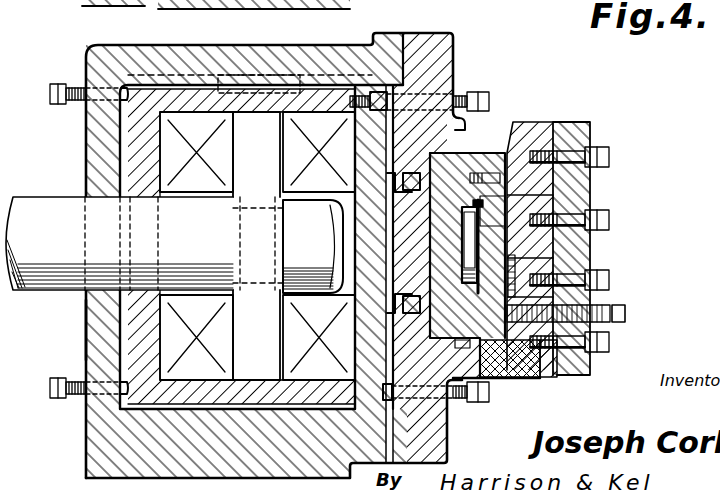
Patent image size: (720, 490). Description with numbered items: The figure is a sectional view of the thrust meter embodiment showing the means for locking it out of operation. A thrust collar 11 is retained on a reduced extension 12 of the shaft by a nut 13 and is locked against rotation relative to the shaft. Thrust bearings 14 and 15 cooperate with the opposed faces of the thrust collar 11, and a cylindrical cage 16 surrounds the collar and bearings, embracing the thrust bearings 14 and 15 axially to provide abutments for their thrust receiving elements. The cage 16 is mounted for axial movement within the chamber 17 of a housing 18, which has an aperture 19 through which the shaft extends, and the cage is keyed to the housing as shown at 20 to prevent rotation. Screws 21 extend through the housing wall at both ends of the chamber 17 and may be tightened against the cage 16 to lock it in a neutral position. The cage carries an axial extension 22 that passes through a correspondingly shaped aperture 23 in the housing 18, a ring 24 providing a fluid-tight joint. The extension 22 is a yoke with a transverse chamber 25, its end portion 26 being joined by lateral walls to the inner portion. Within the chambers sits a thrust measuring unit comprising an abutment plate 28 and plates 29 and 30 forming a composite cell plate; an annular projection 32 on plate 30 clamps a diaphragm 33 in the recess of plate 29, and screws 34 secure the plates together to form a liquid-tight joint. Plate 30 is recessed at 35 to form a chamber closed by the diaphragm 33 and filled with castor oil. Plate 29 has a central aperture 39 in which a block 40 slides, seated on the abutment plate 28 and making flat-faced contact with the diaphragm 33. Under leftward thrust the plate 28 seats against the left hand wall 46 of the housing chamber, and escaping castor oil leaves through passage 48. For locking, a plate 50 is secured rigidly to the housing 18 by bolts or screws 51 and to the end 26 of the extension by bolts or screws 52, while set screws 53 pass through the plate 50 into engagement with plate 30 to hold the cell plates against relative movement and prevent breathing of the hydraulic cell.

The thrust collar 11 is at (274, 152).
The reduced extension 12 is at (252, 228).
The nut 13 is at (311, 293).
The thrust bearing 14 is at (206, 180).
The thrust bearing 15 is at (327, 203).
The cylindrical cage 16 is at (352, 332).
The chamber 17 is at (118, 90).
The housing 18 is at (312, 58).
The aperture 19 is at (92, 312).
The key 20 is at (240, 72).
The screws 21 is at (70, 105).
The axial extension 22 is at (388, 362).
The aperture 23 is at (426, 168).
The ring 24 is at (425, 200).
The chamber 25 is at (426, 256).
The end portion 26 is at (580, 266).
The abutment plate 28 is at (476, 166).
The plate 29 is at (515, 380).
The plate 30 is at (545, 378).
The annular projection 32 is at (482, 203).
The diaphragm 33 is at (466, 284).
The screws 34 is at (516, 140).
The chamber 35 is at (514, 266).
The aperture 39 is at (481, 202).
The block 40 is at (466, 244).
The left hand wall 46 is at (452, 146).
The passage 48 is at (490, 382).
The plate 50 is at (590, 127).
The bolts or screws 51 is at (611, 158).
The bolts or screws 52 is at (611, 221).
The set screws 53 is at (628, 311).